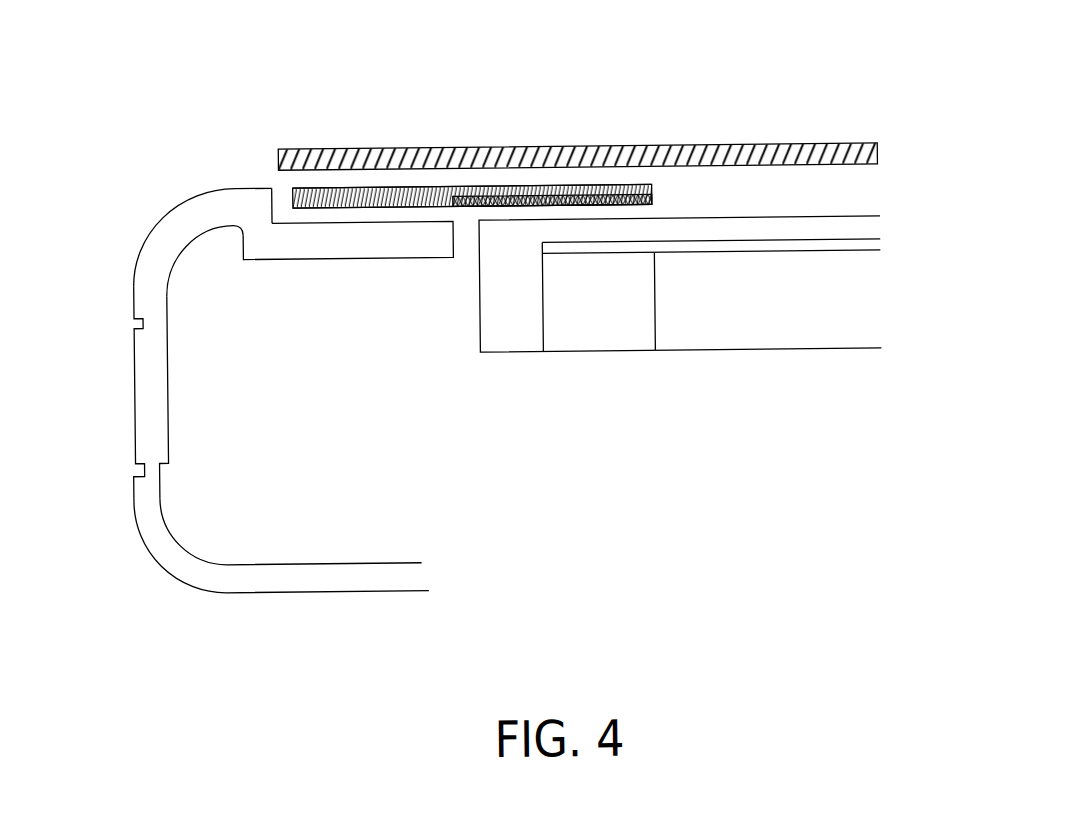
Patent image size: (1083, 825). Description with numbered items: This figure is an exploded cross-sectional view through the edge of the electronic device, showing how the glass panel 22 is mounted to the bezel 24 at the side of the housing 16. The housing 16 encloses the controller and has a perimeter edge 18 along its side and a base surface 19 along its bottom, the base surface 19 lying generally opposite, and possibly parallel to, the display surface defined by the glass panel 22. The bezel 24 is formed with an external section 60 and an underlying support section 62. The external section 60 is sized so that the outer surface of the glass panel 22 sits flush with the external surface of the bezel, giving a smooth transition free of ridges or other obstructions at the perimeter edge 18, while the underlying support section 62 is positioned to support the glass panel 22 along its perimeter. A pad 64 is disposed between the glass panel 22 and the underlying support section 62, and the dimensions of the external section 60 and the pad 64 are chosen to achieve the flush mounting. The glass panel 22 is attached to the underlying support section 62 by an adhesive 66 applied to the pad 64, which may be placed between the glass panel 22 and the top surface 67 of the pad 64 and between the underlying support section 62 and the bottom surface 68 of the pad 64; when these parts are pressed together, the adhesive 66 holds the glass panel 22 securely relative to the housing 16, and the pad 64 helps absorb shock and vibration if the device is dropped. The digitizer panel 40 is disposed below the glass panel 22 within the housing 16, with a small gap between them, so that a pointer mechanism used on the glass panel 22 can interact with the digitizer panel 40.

The housing 16 is at (140, 260).
The perimeter edge 18 is at (133, 398).
The base surface 19 is at (349, 593).
The glass panel 22 is at (749, 155).
The bezel 24 is at (250, 211).
The digitizer panel 40 is at (479, 317).
The external section 60 is at (263, 187).
The underlying support section 62 is at (313, 259).
The pad 64 is at (410, 191).
The adhesive 66 is at (352, 188).
The top surface 67 is at (327, 186).
The bottom surface 68 is at (306, 214).